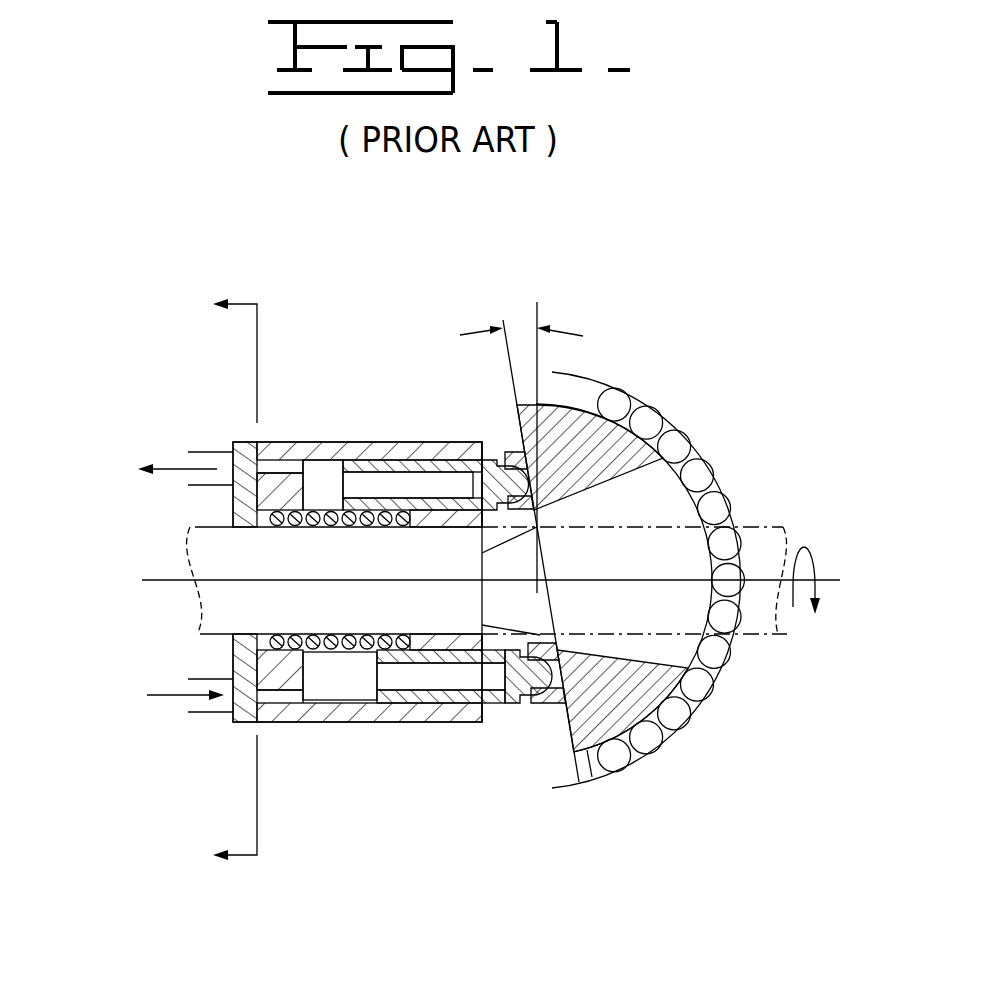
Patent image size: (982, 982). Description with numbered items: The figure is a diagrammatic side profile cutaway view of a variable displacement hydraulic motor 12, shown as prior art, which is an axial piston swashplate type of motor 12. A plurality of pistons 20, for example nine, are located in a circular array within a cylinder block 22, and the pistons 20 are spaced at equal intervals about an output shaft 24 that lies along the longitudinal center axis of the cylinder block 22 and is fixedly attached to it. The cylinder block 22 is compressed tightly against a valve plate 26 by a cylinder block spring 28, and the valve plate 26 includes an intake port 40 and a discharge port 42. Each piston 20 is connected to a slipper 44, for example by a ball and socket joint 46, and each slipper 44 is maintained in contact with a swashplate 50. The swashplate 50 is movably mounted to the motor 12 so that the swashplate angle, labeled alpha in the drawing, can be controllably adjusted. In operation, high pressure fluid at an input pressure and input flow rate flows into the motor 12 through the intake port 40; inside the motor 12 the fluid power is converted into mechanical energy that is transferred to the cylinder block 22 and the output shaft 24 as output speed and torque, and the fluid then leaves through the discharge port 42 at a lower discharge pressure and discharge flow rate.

The variable displacement hydraulic motor 12 is at (247, 240).
The piston 20 is at (447, 455).
The cylinder block 22 is at (367, 442).
The output shaft 24 is at (760, 525).
The valve plate 26 is at (245, 723).
The cylinder block spring 28 is at (312, 510).
The intake port 40 is at (187, 682).
The discharge port 42 is at (190, 484).
The slipper 44 is at (542, 700).
The ball and socket joint 46 is at (550, 697).
The swashplate 50 is at (592, 775).